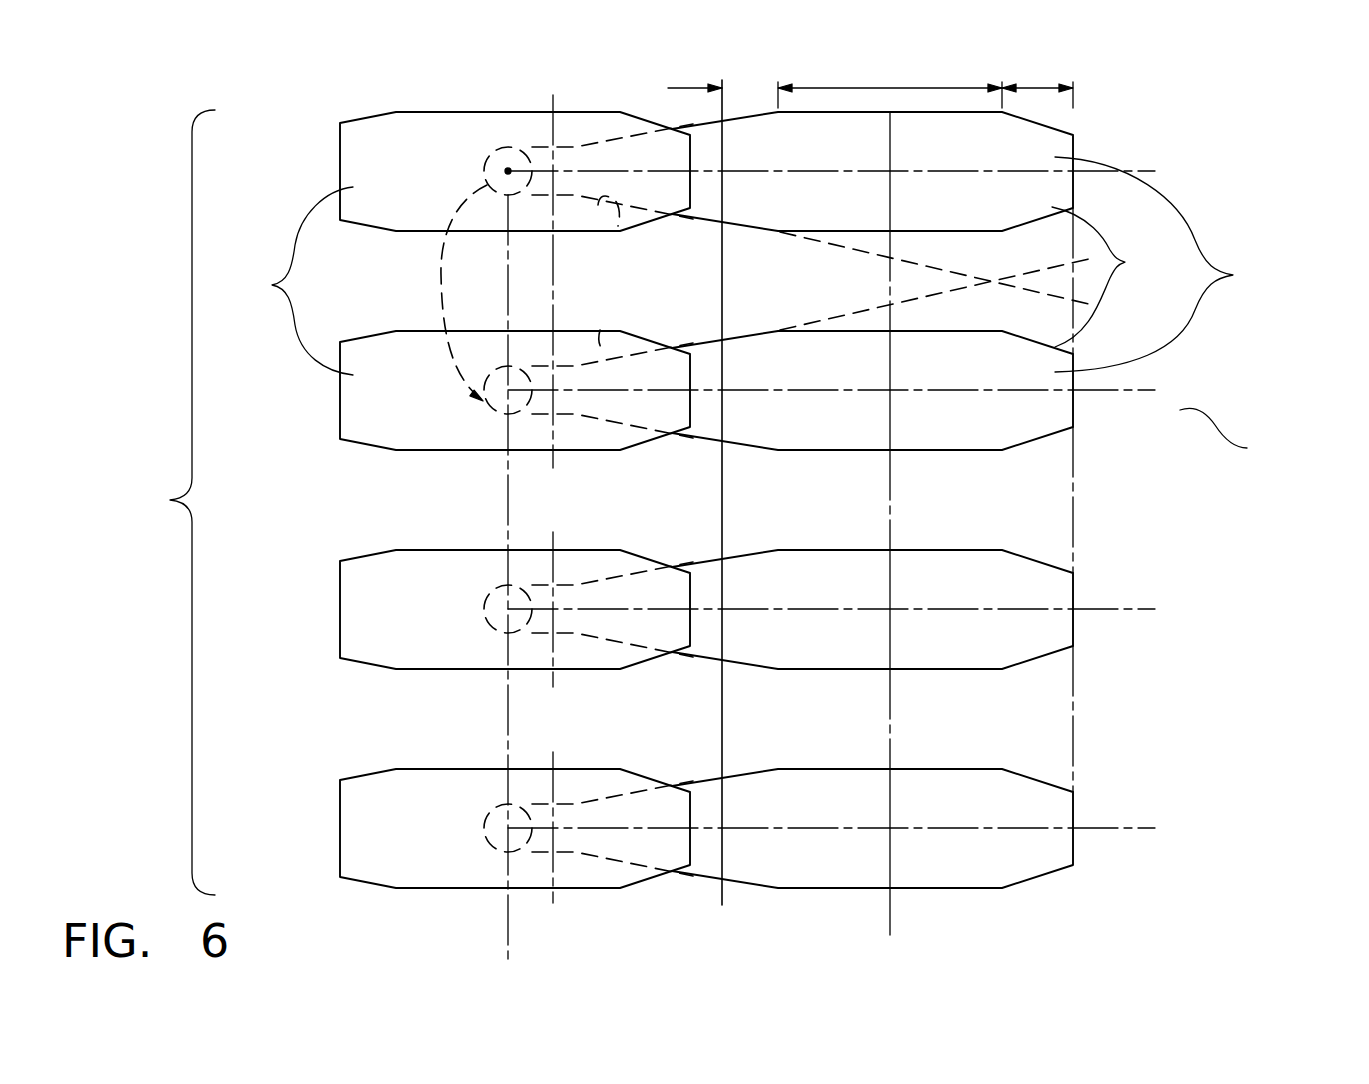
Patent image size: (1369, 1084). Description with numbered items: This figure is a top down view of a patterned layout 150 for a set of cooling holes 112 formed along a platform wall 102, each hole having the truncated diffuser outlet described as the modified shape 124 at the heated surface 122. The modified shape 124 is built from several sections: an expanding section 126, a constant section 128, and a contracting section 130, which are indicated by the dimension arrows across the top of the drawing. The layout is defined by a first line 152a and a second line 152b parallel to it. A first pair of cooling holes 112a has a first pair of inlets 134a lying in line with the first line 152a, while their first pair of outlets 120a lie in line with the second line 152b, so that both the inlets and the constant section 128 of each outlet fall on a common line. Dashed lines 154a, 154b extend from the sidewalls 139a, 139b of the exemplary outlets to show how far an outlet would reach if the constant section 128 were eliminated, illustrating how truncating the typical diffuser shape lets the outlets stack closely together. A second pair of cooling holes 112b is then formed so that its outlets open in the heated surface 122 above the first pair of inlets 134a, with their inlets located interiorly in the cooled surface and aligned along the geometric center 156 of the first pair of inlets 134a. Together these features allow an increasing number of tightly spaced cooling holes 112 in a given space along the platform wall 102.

The platform wall 102 is at (1220, 425).
The set of cooling holes 112 is at (170, 500).
The first pair of cooling holes 112a is at (986, 268).
The second pair of cooling holes 112b is at (453, 251).
The first pair of outlets 120a is at (930, 328).
The heated surface 122 is at (362, 291).
The modified shape 124 is at (1062, 127).
The expanding section 126 is at (684, 86).
The constant section 128 is at (878, 88).
The contracting section 130 is at (1038, 88).
The first pair of inlets 134a is at (440, 252).
The sidewall 139a is at (620, 231).
The sidewall 139b is at (607, 325).
The patterned layout 150 is at (330, 100).
The first line 152a is at (510, 930).
The second line 152b is at (890, 928).
The dashed line 154a is at (903, 258).
The dashed line 154b is at (878, 305).
The geometric center 156 is at (508, 171).